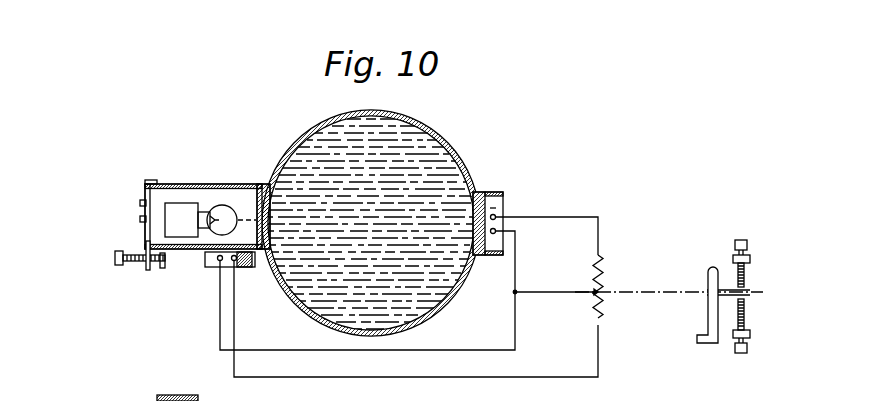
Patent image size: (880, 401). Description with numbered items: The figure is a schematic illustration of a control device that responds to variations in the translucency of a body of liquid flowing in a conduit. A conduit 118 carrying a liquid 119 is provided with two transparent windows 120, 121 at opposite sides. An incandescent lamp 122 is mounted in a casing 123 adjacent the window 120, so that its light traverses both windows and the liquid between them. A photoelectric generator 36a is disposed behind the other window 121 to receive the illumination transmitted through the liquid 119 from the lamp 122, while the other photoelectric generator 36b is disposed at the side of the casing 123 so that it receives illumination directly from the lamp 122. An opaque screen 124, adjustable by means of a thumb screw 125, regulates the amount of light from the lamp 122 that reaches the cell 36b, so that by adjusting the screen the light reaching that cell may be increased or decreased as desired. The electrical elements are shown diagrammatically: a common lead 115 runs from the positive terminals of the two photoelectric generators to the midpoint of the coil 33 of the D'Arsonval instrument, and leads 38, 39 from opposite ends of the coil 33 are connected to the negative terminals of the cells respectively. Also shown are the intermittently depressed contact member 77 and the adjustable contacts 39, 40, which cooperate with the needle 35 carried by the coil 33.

The conduit 118 is at (446, 146).
The liquid 119 is at (398, 140).
The transparent window 120 is at (257, 201).
The transparent window 121 is at (488, 198).
The incandescent lamp 122 is at (223, 204).
The casing 123 is at (179, 193).
The opaque screen 124 is at (178, 262).
The thumb screw 125 is at (132, 264).
The photoelectric generator 36a is at (498, 200).
The photoelectric generator 36b is at (207, 257).
The lead 38 is at (570, 217).
The lead / adjustable contact 39 is at (518, 382).
The coil 33 is at (605, 273).
The common lead 115 is at (535, 291).
The needle 35 is at (680, 289).
The contact member 77 is at (709, 309).
The adjustable contact 40 is at (743, 325).